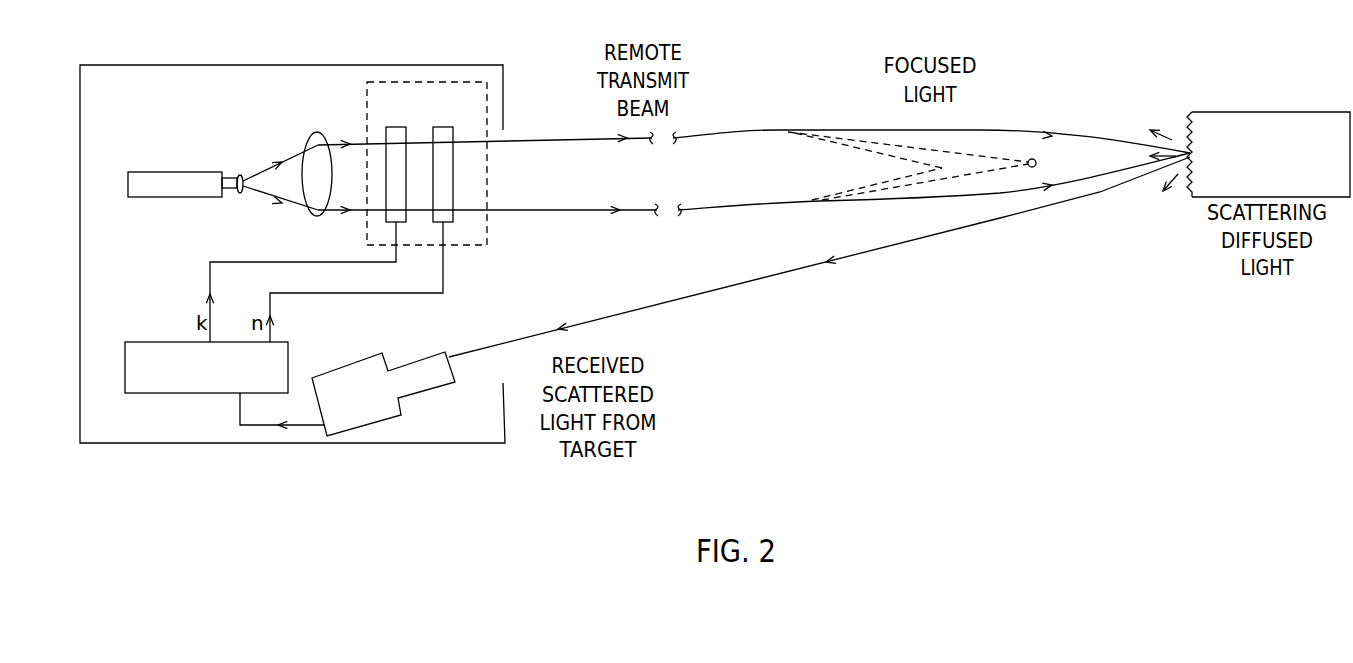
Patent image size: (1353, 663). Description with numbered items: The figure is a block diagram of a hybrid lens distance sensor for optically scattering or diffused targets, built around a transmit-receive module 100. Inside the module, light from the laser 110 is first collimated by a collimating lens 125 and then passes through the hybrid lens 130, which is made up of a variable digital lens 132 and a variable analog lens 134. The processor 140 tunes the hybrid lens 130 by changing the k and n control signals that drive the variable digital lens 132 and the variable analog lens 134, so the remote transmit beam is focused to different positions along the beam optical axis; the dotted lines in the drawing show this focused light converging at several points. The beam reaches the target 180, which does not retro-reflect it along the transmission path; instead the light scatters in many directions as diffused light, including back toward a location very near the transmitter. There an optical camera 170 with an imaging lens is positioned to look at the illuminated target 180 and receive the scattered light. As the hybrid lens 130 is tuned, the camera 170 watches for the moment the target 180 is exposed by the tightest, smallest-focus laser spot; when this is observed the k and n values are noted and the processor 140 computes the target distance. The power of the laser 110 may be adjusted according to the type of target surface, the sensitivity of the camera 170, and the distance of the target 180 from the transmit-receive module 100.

The transmit-receive module 100 is at (221, 81).
The laser 110 is at (143, 172).
The collimating lens 125 is at (306, 147).
The hybrid lens 130 is at (445, 82).
The variable digital lens 132 is at (386, 135).
The variable analog lens 134 is at (453, 135).
The processor 140 is at (145, 342).
The optical camera 170 is at (350, 368).
The target 180 is at (1251, 120).